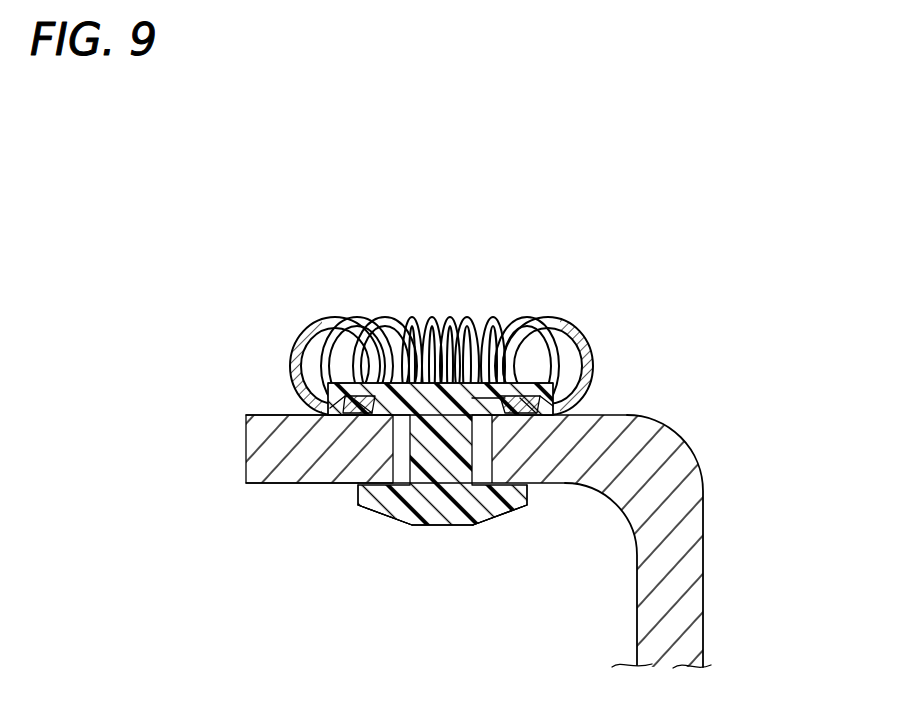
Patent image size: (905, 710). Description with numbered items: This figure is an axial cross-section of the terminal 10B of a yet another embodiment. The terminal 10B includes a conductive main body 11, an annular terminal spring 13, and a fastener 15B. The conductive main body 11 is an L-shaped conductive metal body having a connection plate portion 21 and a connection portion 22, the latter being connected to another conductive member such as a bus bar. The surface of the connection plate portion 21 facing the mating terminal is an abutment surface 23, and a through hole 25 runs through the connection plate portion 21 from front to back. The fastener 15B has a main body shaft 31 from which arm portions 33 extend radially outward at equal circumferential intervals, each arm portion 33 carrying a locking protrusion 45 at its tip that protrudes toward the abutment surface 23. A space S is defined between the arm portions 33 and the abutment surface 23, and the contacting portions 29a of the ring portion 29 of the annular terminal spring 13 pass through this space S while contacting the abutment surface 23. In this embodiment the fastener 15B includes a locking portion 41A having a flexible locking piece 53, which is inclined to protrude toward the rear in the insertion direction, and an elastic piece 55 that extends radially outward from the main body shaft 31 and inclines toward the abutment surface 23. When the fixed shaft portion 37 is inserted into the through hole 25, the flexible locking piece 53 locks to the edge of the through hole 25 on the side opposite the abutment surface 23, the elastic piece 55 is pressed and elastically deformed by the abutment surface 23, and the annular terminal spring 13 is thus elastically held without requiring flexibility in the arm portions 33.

The terminal 10B is at (278, 313).
The conductive main body 11 is at (232, 451).
The annular terminal spring 13 is at (612, 355).
The fastener 15B is at (402, 372).
The connection plate portion 21 is at (250, 480).
The connection portion 22 is at (683, 614).
The abutment surface 23 is at (265, 415).
The through hole 25 is at (393, 527).
The ring portion 29 is at (304, 342).
The contacting portions 29a is at (352, 405).
The main body shaft 31 is at (462, 352).
The arm portions 33 is at (348, 368).
The fixed shaft portion 37 is at (522, 490).
The locking portion 41A is at (446, 527).
The locking protrusion 45 is at (340, 407).
The flexible locking piece 53 is at (370, 508).
The elastic piece 55 is at (372, 415).
The space S is at (598, 378).